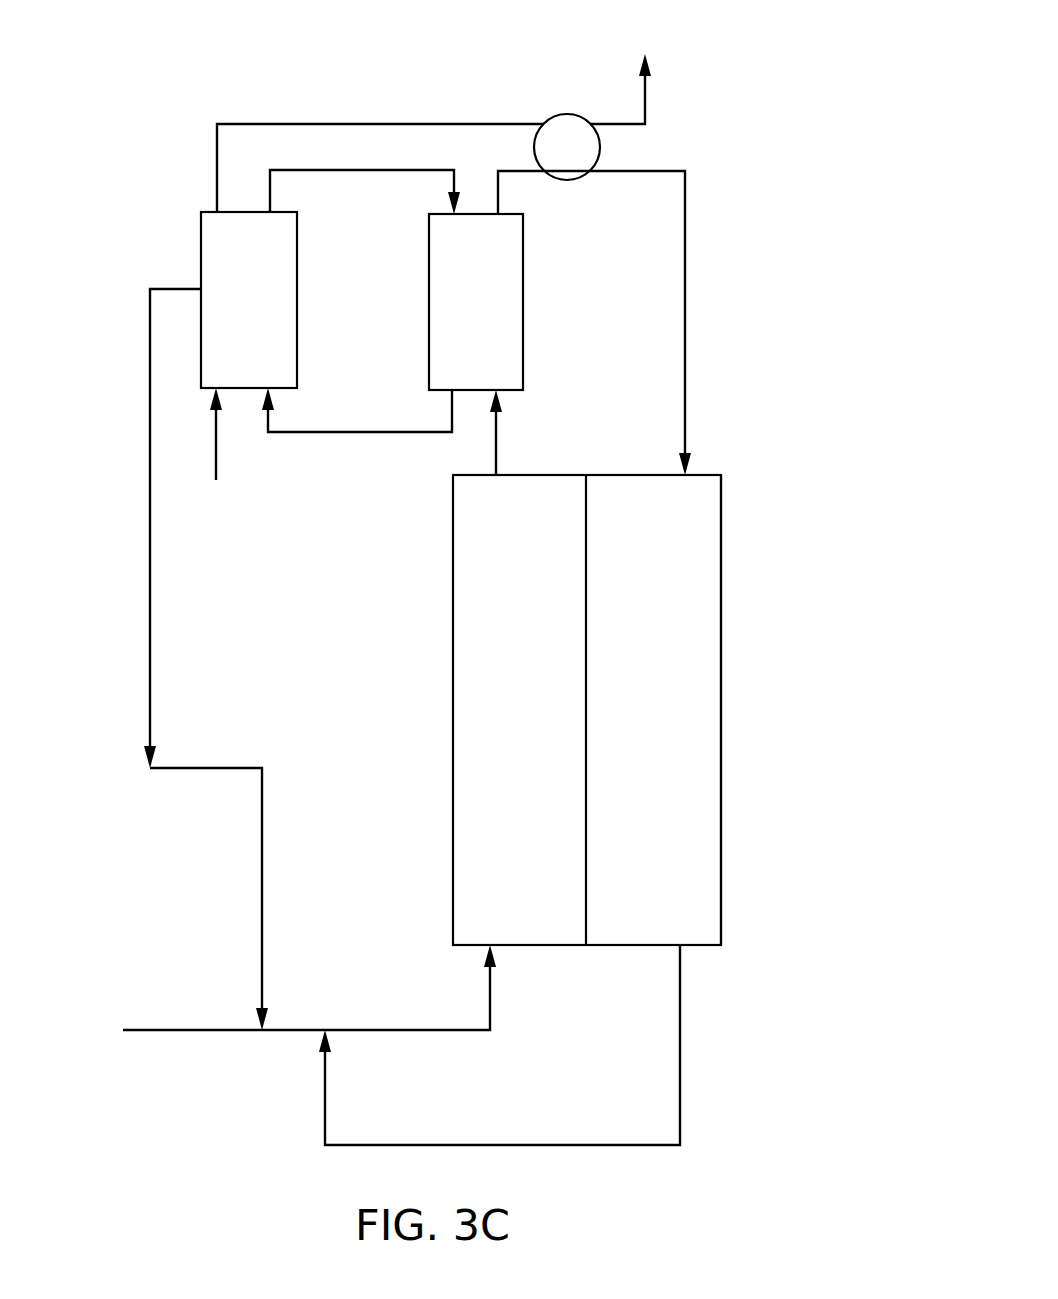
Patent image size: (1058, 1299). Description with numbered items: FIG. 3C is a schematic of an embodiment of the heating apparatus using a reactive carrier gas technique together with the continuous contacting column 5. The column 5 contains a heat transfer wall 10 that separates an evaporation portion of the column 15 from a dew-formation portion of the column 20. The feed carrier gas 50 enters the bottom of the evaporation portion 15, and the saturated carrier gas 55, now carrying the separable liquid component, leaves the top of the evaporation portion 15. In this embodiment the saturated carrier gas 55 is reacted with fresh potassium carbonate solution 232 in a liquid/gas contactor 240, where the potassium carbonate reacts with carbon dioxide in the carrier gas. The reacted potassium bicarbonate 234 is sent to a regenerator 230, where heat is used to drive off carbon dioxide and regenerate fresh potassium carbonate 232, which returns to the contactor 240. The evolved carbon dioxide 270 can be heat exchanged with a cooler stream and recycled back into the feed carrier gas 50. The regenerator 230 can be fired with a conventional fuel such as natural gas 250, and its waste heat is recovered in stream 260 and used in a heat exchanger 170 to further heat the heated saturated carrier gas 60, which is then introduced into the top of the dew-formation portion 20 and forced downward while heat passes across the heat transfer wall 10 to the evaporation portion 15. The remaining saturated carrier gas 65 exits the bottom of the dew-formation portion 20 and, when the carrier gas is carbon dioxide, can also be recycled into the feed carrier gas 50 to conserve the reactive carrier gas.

The continuous contacting column 5 is at (732, 668).
The heat transfer wall 10 is at (588, 533).
The evaporation portion of the column 15 is at (541, 700).
The dew-formation portion of the column 20 is at (630, 692).
The carrier gas 50 is at (490, 1008).
The saturated carrier gas 55 is at (496, 445).
The heated saturated carrier gas 60 is at (685, 337).
The remaining saturated carrier gas 65 is at (680, 1038).
The heat exchanger 170 is at (565, 112).
The regenerator 230 is at (214, 310).
The fresh potassium carbonate solution 232 is at (342, 172).
The reacted potassium bicarbonate 234 is at (384, 432).
The liquid/gas contactor 240 is at (505, 309).
The natural gas 250 is at (216, 465).
The waste heat recovery stream 260 is at (330, 123).
The evolved carbon dioxide 270 is at (150, 615).